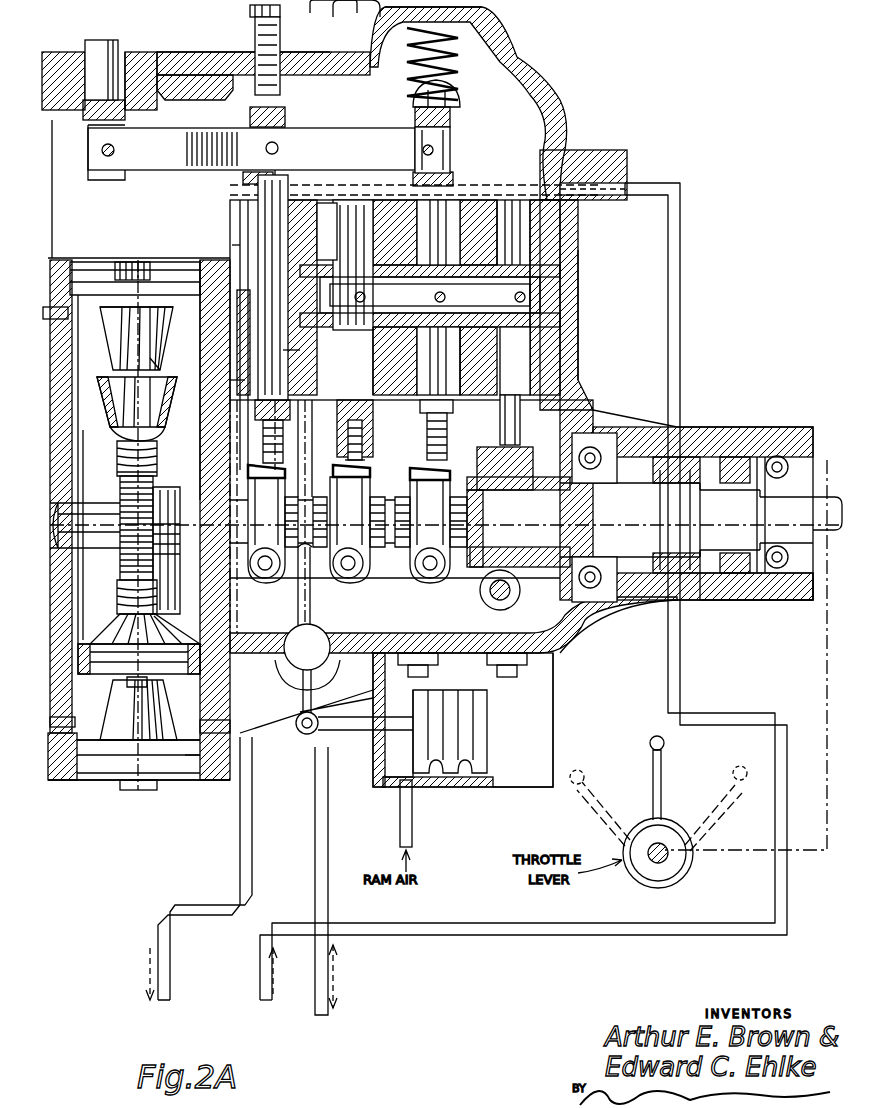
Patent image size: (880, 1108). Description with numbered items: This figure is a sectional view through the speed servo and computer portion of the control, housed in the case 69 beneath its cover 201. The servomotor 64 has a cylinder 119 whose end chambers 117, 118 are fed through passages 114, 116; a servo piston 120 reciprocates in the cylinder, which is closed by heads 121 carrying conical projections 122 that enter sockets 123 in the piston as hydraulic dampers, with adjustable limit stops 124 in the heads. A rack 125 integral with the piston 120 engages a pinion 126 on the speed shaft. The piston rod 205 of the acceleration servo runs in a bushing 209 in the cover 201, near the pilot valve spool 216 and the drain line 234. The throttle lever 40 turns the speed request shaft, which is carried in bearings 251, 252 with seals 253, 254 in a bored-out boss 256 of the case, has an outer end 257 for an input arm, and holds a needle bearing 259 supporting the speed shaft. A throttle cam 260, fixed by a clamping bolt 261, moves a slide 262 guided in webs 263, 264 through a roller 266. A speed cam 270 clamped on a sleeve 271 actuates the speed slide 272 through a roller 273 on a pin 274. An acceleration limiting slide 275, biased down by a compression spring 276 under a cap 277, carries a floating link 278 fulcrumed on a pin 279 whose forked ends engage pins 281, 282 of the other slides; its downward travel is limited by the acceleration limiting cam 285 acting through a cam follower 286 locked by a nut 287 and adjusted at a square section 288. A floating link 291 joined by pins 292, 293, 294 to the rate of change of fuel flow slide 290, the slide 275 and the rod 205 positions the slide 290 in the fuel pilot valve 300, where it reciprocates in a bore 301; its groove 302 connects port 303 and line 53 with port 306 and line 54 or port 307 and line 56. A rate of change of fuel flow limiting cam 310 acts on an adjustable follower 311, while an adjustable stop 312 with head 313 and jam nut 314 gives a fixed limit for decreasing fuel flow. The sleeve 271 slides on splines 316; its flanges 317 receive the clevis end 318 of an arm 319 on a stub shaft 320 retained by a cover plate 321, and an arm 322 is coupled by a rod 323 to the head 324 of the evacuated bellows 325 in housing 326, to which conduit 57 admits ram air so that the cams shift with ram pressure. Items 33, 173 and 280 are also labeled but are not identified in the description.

The throttle linkage 33 is at (700, 320).
The throttle lever 40 is at (688, 846).
The pressure line 53 is at (318, 812).
The line 54 is at (680, 235).
The line 56 is at (158, 956).
The pressure conduit 57 is at (398, 832).
The servomotor 64 is at (98, 790).
The case 69 is at (595, 645).
The passage 114 is at (138, 729).
The passage 116 is at (136, 319).
The chamber 117 is at (190, 773).
The chamber 118 is at (136, 338).
The cylinder 119 is at (124, 543).
The servo piston 120 is at (85, 525).
The heads 121 is at (160, 266).
The conical projections 122 is at (172, 695).
The sockets 123 is at (137, 402).
The adjustable limit stops 124 is at (108, 702).
The rack 125 is at (137, 419).
The pinion 126 is at (145, 629).
The shaft shoulder 173 is at (695, 470).
The cover 201 is at (205, 50).
The piston rod 205 is at (100, 40).
The bushing 209 is at (125, 52).
The pilot valve spool 216 is at (485, 17).
The drain line 234 is at (360, 17).
The bearing 251 is at (770, 430).
The bearing 252 is at (592, 410).
The seal 253 is at (678, 440).
The seal 254 is at (738, 455).
The bored-out boss 256 is at (715, 605).
The outer end of shaft 257 is at (825, 494).
The needle bearing 259 is at (480, 590).
The throttle cam 260 is at (500, 455).
The clamping bolt 261 is at (505, 595).
The slide 262 is at (570, 345).
The web 263 is at (488, 215).
The web 264 is at (518, 361).
The roller 266 is at (535, 390).
The speed cam 270 is at (316, 521).
The sleeve 271 is at (395, 587).
The speed slide 272 is at (345, 205).
The roller 273 is at (372, 425).
The pin 274 is at (372, 443).
The acceleration limiting slide 275 is at (450, 205).
The compression spring 276 is at (452, 59).
The cap 277 is at (452, 92).
The floating link 278 is at (448, 264).
The pin or bolt 279 is at (446, 297).
The passage 280 is at (300, 352).
The pin or bolt 281 is at (565, 272).
The pin or bolt 282 is at (366, 297).
The acceleration limiting cam 285 is at (375, 475).
The cam follower 286 is at (430, 484).
The nut 287 is at (392, 361).
The square section 288 is at (447, 440).
The rate of change of fuel flow slide 290 is at (250, 117).
The floating link 291 is at (185, 140).
The pin 292 is at (278, 143).
The pin 293 is at (440, 150).
The pin 294 is at (114, 150).
The fuel pilot valve 300 is at (226, 246).
The bore 301 is at (238, 380).
The groove 302 is at (265, 282).
The port 303 is at (322, 262).
The port 306 is at (240, 230).
The port 307 is at (216, 380).
The rate of change of fuel flow limiting cam 310 is at (228, 517).
The adjustable follower 311 is at (266, 483).
The adjustable stop 312 is at (255, 88).
The head 313 is at (250, 10).
The jam nut 314 is at (315, 13).
The splines 316 is at (431, 531).
The flanges 317 is at (273, 530).
The clevis end 318 is at (349, 530).
The arm 319 is at (296, 617).
The cylindrical stub shaft 320 is at (330, 640).
The cover plate 321 is at (290, 690).
The arm 322 is at (296, 728).
The rod 323 is at (333, 732).
The head 324 is at (398, 787).
The evacuated bellows 325 is at (462, 787).
The closed housing 326 is at (553, 715).